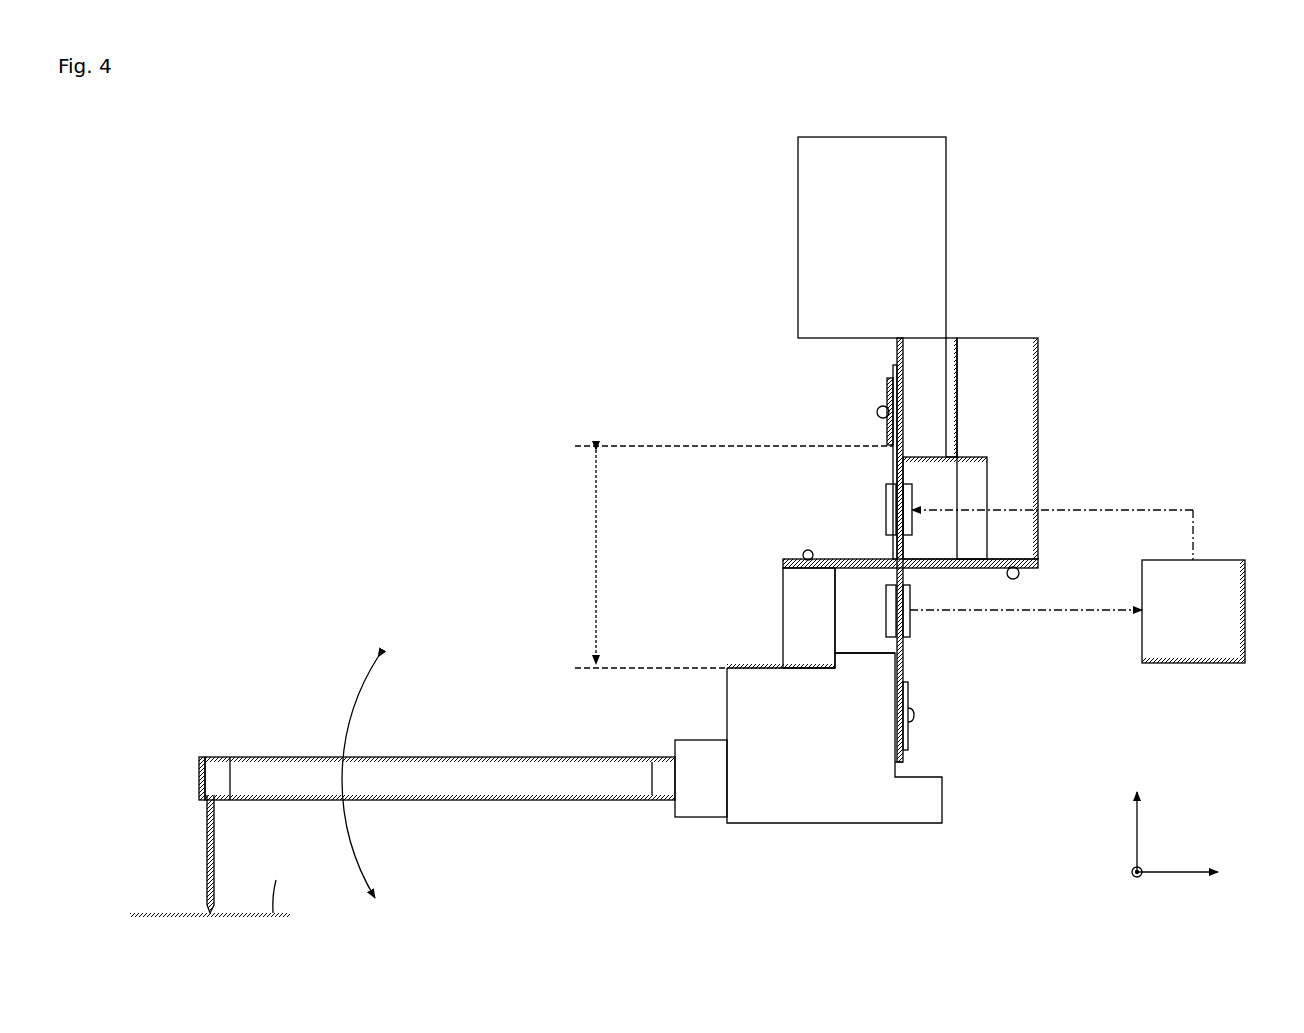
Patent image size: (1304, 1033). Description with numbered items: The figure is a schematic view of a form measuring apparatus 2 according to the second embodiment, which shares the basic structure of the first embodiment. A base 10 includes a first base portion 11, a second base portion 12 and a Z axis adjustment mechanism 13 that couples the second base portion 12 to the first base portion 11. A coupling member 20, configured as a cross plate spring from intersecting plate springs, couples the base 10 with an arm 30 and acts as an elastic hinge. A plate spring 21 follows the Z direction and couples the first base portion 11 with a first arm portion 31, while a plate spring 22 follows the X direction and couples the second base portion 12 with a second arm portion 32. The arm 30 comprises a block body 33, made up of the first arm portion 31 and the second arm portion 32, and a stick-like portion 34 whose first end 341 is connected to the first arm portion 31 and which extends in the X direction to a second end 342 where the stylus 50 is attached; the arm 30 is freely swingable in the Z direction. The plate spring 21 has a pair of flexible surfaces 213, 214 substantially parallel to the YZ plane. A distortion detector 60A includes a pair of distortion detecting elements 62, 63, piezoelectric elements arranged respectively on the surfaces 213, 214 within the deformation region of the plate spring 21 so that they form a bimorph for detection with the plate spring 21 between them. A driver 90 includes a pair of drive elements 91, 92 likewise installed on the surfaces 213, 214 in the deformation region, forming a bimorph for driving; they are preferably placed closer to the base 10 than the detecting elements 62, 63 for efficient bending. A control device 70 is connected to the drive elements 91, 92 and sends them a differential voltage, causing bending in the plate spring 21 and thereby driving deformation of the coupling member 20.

The form measuring apparatus 2 is at (1107, 163).
The base 10 is at (755, 240).
The first base portion 11 is at (808, 302).
The second base portion 12 is at (1038, 385).
The Z axis adjustment mechanism 13 is at (956, 338).
The coupling member 20 is at (722, 432).
The plate spring 21 is at (895, 457).
The surface 214 is at (893, 480).
The plate spring 22 is at (830, 558).
The surface 213 is at (908, 680).
The driver 90 is at (935, 492).
The drive element 91 is at (912, 518).
The drive element 92 is at (885, 515).
The distortion detector 60A is at (980, 642).
The distortion detecting element 62 is at (910, 625).
The distortion detecting element 63 is at (885, 610).
The control device 70 is at (1225, 560).
The arm 30 is at (527, 580).
The first arm portion 31 is at (848, 823).
The second arm portion 32 is at (790, 627).
The block body 33 is at (697, 625).
The stick-like portion 34 is at (468, 757).
The first end 341 is at (660, 745).
The second end 342 is at (215, 757).
The stylus 50 is at (207, 855).